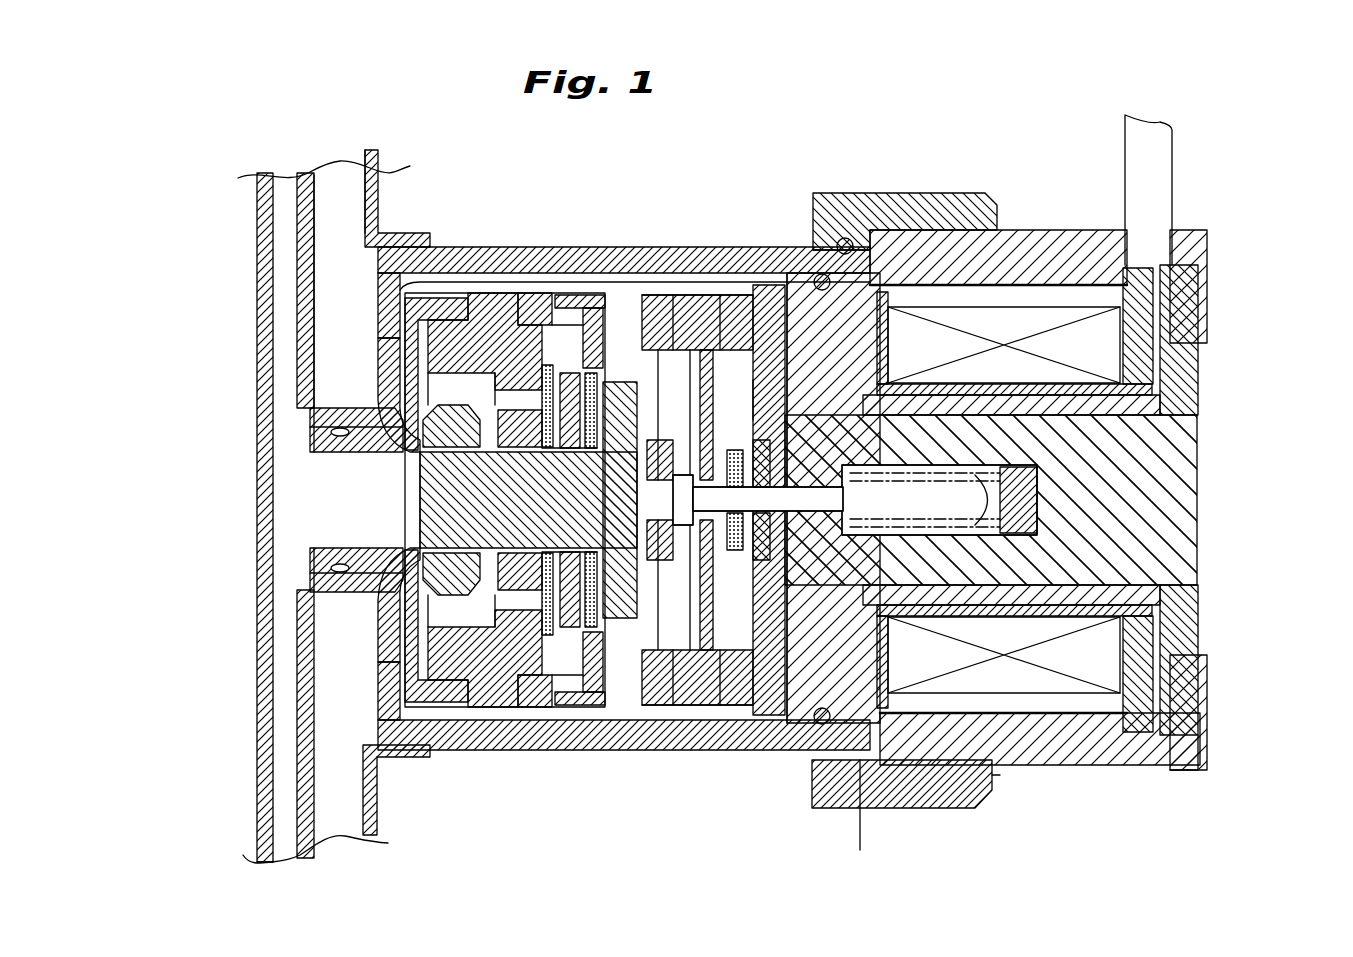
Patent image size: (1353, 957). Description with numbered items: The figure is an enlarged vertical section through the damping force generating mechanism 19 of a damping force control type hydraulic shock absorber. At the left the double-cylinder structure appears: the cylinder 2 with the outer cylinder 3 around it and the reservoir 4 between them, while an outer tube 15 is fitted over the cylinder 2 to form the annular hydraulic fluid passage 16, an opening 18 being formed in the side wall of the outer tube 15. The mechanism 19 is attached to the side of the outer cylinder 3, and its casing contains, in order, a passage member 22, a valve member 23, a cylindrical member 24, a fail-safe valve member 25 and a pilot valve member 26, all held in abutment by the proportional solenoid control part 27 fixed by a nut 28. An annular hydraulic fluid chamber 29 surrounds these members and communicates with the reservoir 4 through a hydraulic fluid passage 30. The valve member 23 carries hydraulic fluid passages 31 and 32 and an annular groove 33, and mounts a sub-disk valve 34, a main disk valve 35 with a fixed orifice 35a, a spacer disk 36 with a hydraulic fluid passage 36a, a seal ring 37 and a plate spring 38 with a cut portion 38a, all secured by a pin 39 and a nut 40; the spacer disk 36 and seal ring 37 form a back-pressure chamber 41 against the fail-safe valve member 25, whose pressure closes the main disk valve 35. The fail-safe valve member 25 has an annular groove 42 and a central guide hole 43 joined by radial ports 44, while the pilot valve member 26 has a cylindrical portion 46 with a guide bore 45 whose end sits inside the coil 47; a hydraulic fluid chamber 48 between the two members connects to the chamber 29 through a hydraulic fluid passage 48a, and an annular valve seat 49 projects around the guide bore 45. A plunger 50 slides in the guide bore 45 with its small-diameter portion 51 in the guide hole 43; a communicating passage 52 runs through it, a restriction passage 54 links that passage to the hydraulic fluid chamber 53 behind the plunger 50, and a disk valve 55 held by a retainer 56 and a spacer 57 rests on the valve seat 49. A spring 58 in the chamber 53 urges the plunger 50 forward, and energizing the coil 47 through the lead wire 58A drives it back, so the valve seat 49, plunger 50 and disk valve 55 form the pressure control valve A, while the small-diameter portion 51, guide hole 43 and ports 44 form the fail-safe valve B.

The cylinder 2 is at (262, 798).
The outer cylinder 3 is at (373, 158).
The reservoir 4 is at (340, 162).
The outer tube 15 is at (306, 178).
The annular hydraulic fluid passage 16 is at (266, 178).
The opening 18 is at (300, 590).
The damping force generating mechanism 19 is at (1220, 450).
The passage member 22 is at (420, 425).
The valve member 23 is at (430, 735).
The cylindrical member 24 is at (553, 640).
The fail-safe valve member 25 is at (664, 740).
The pilot valve member 26 is at (800, 724).
The proportional solenoid control part 27 is at (1180, 765).
The nut 28 is at (962, 797).
The annular hydraulic fluid chamber 29 is at (582, 248).
The hydraulic fluid passage 30 is at (380, 300).
The hydraulic fluid passage 31 is at (457, 724).
The hydraulic fluid passage 32 is at (503, 712).
The annular groove 33 is at (522, 722).
The sub-disk valve 34 is at (456, 250).
The main disk valve 35 is at (503, 248).
The fixed orifice 35a is at (548, 715).
The spacer disk 36 is at (542, 248).
The hydraulic fluid passage 36a is at (600, 735).
The seal ring 37 is at (602, 245).
The disk-shaped plate spring 38 is at (624, 248).
The cut portion 38a is at (586, 742).
The pin 39 is at (430, 500).
The nut 40 is at (445, 542).
The back-pressure chamber 41 is at (652, 700).
The annular groove 42 is at (703, 350).
The guide hole 43 is at (705, 300).
The ports 44 is at (765, 360).
The guide bore 45 is at (820, 290).
The cylindrical portion 46 is at (880, 258).
The coil 47 is at (1043, 262).
The hydraulic fluid chamber 48 is at (800, 300).
The hydraulic fluid passage 48a is at (745, 400).
The annular valve seat 49 is at (755, 600).
The plunger 50 is at (940, 300).
The small-diameter portion 51 is at (670, 720).
The communicating passage 52 is at (850, 258).
The hydraulic fluid chamber 53 is at (1000, 380).
The restriction passage 54 is at (905, 790).
The disk valve 55 is at (760, 560).
The retainer 56 is at (700, 540).
The spacer 57 is at (735, 552).
The spring 58 is at (970, 520).
The lead wire 58A is at (1165, 183).
The pressure control valve A is at (858, 831).
The fail-safe valve B is at (667, 245).